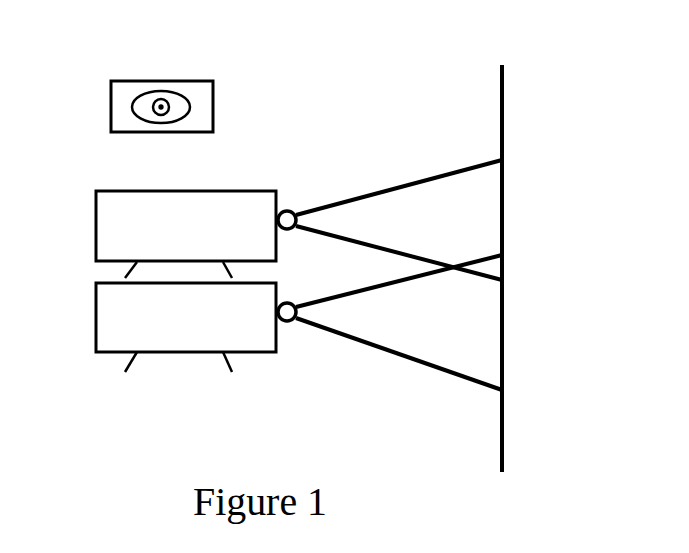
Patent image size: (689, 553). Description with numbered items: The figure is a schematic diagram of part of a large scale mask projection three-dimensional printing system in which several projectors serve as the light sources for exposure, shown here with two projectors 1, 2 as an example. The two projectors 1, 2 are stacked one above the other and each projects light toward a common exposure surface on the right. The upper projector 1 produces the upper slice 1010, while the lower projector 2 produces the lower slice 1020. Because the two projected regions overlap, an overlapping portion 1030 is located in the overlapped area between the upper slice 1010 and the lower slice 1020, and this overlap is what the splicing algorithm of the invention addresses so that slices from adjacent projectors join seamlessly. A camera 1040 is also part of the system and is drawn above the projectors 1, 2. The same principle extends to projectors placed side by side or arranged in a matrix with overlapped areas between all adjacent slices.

The upper projector 1 is at (100, 185).
The lower projector 2 is at (93, 312).
The upper slice 1010 is at (502, 160).
The lower slice 1020 is at (502, 380).
The overlapping portion 1030 is at (502, 255).
The camera 1040 is at (213, 87).